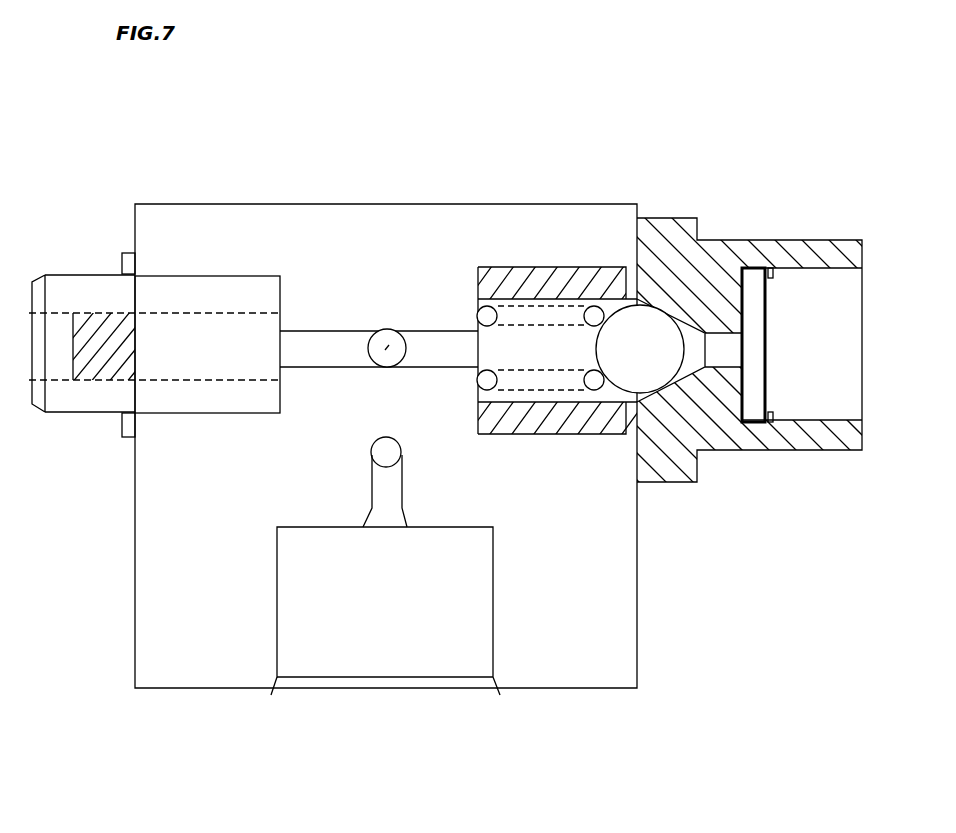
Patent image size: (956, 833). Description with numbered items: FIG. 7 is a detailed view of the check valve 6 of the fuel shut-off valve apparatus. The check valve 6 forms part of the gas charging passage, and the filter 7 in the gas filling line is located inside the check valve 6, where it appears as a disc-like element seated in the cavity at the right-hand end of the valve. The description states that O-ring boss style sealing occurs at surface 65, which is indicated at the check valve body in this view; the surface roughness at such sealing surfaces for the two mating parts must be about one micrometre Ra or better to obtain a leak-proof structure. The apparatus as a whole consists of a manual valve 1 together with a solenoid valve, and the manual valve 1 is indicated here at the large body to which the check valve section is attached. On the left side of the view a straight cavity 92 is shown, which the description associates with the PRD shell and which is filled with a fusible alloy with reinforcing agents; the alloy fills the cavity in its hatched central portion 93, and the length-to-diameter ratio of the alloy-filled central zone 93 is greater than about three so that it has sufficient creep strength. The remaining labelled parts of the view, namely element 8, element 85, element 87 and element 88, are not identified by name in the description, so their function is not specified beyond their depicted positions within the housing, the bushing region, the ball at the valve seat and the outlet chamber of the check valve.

The manual valve 1 is at (388, 645).
The check valve 6 is at (710, 188).
The filter 7 is at (760, 265).
The actuator housing 8 is at (158, 266).
The sealing surface 65 is at (627, 443).
The guide bushing 85 is at (478, 306).
The ball 87 is at (640, 349).
The outlet chamber 88 is at (843, 415).
The straight cavity 92 is at (237, 305).
The alloy-filled central portion 93 is at (98, 315).